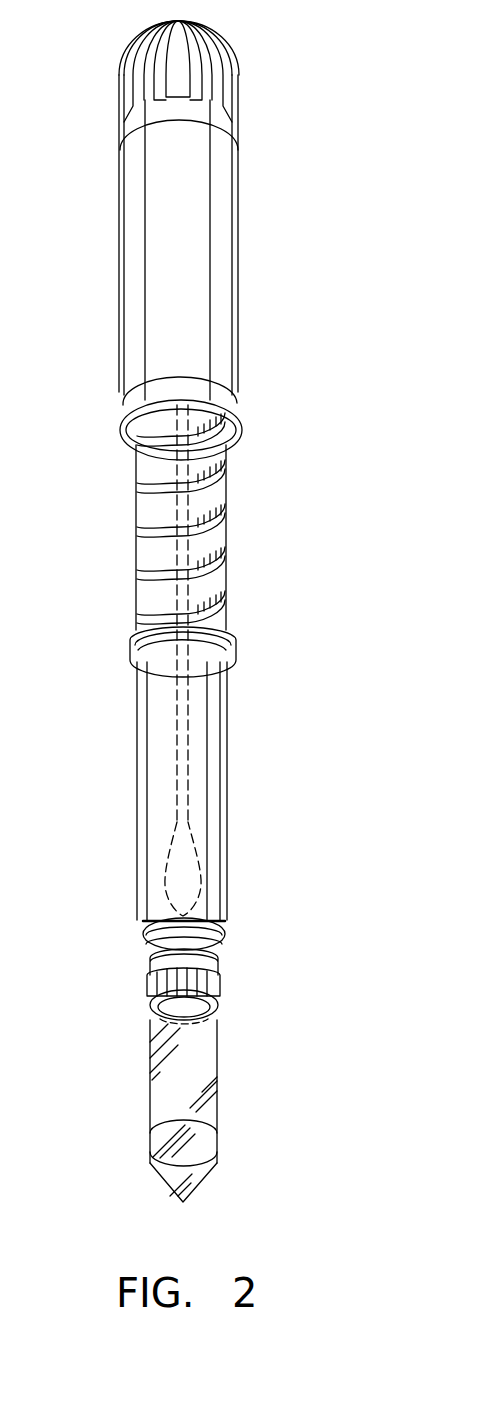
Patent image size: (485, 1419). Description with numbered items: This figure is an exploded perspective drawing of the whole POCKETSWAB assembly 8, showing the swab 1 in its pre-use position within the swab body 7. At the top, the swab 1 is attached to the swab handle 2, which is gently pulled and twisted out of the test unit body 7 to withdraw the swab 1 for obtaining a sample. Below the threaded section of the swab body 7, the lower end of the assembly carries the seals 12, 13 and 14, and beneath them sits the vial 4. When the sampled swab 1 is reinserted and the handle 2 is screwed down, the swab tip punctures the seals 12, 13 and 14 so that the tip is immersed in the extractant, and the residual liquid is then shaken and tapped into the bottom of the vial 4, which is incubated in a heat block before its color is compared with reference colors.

The swab 1 is at (188, 760).
The swab handle 2 is at (92, 22).
The vial 4 is at (95, 1018).
The swab body 7 is at (95, 1018).
The POCKETSWAB assembly 8 is at (334, 22).
The seal 12 is at (223, 938).
The seal 13 is at (219, 982).
The seal 14 is at (190, 1025).